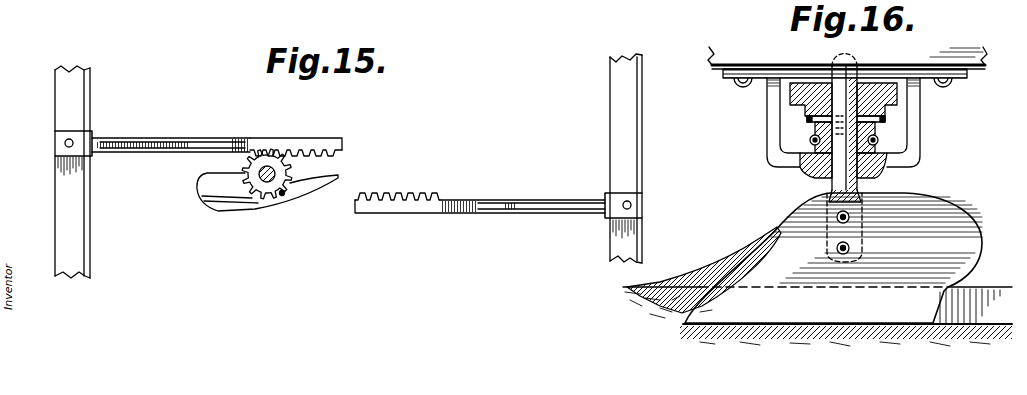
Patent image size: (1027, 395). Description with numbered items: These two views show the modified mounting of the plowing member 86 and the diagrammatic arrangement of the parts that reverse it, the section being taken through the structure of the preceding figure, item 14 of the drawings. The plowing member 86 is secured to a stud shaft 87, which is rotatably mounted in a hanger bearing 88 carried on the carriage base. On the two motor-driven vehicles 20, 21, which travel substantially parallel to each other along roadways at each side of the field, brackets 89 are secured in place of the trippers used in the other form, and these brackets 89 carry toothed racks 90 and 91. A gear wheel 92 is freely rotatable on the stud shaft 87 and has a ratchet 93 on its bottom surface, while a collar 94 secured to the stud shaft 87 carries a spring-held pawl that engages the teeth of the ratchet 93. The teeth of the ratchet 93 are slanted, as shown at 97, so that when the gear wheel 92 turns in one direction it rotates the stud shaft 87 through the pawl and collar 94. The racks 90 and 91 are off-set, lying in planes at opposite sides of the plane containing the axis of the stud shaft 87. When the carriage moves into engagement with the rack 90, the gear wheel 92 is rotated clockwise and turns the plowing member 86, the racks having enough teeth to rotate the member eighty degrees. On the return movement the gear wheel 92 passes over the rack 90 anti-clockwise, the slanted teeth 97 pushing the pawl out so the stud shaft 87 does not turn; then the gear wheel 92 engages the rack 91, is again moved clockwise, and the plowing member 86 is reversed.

In FIG. 16, the platform 14 is at (985, 70).
In FIG. 15, the motor-driven vehicle 20 is at (85, 84).
In FIG. 15, the motor-driven vehicle 21 is at (619, 108).
In FIG. 15, the plowing member 86 is at (211, 210).
In FIG. 16, the plowing member 86 is at (833, 258).
In FIG. 15, the stud shaft 87 is at (273, 182).
In FIG. 16, the stud shaft 87 is at (860, 187).
In FIG. 16, the hanger bearing 88 is at (921, 129).
In FIG. 15, the bracket 89 is at (143, 138).
In FIG. 15, the toothed rack 90 is at (302, 136).
In FIG. 15, the toothed rack 91 is at (433, 193).
In FIG. 15, the gear wheel 92 is at (278, 197).
In FIG. 16, the gear wheel 92 is at (806, 84).
In FIG. 16, the ratchet 93 is at (807, 119).
In FIG. 16, the collar 94 is at (879, 138).
In FIG. 16, the slanted teeth 97 is at (809, 138).